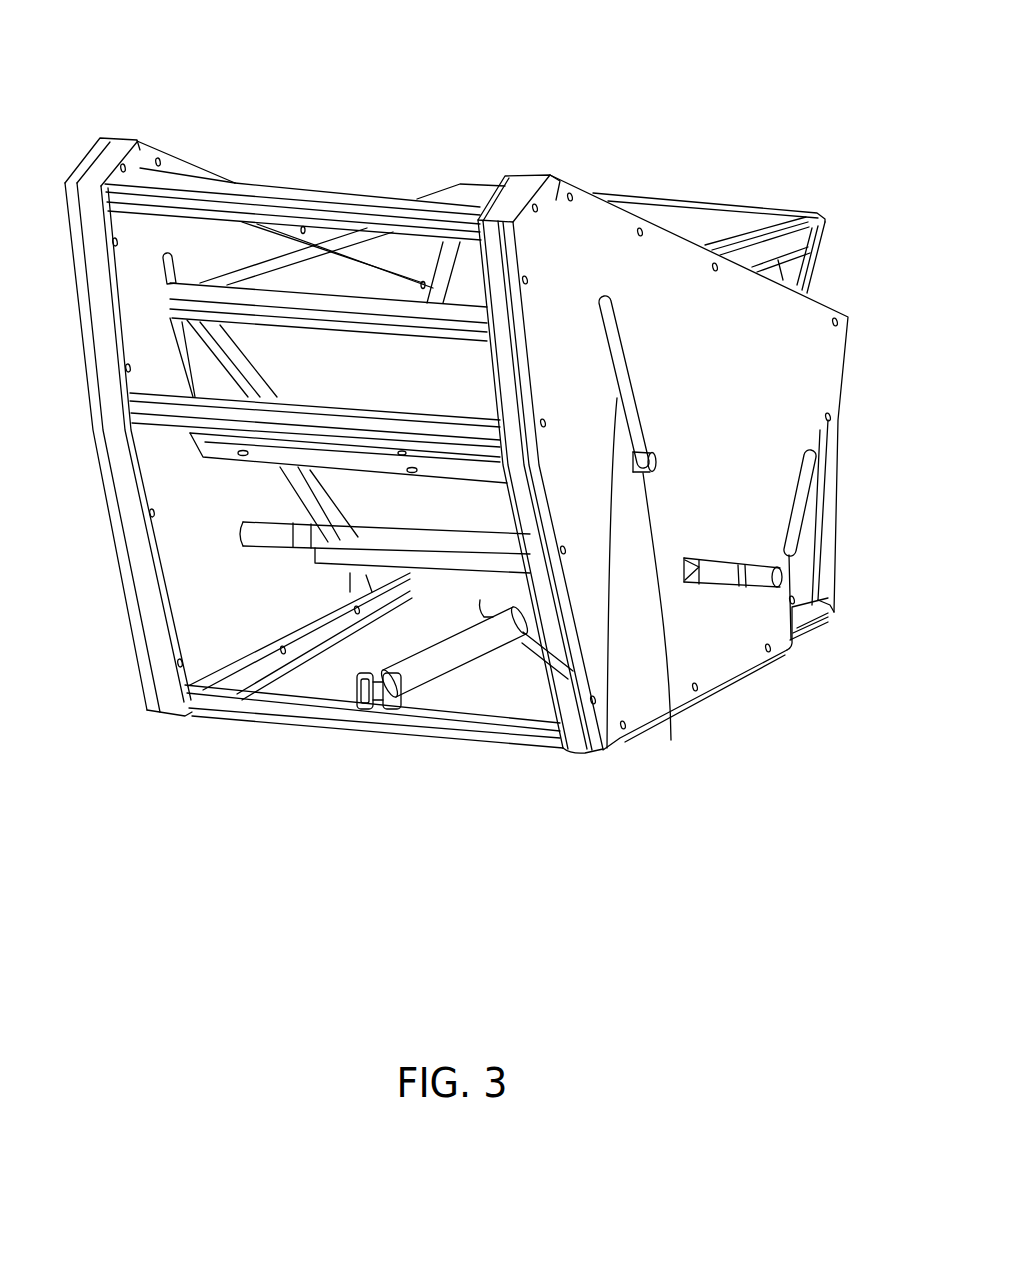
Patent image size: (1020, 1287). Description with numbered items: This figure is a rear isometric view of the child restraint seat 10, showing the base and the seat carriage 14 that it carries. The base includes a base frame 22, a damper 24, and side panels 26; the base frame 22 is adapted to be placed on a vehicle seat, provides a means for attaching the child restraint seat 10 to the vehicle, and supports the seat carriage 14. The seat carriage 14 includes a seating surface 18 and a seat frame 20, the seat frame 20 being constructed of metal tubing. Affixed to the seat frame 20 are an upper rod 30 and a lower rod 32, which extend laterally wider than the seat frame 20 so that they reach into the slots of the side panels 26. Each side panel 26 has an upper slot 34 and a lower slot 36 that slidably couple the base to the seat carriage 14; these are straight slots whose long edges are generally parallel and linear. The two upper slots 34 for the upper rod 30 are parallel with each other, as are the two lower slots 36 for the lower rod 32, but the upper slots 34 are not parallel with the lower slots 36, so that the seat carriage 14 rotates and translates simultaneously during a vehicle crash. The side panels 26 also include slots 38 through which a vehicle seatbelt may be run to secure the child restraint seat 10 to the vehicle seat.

The child restraint seat 10 is at (167, 783).
The seat carriage 14 is at (795, 212).
The seating surface 18 is at (672, 217).
The seat frame 20 is at (438, 185).
The base frame 22 is at (498, 743).
The damper 24 is at (418, 663).
The side panels 26 is at (690, 705).
The upper rod 30 is at (671, 715).
The lower rod 32 is at (792, 643).
The upper slot 34 is at (604, 750).
The lower slot 36 is at (718, 587).
The slots 38 is at (797, 555).